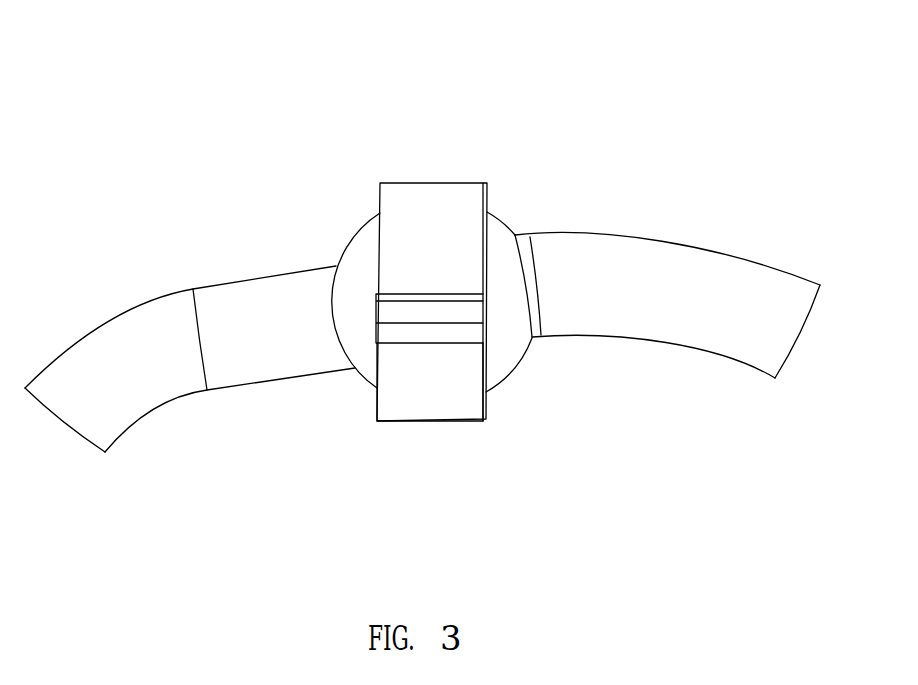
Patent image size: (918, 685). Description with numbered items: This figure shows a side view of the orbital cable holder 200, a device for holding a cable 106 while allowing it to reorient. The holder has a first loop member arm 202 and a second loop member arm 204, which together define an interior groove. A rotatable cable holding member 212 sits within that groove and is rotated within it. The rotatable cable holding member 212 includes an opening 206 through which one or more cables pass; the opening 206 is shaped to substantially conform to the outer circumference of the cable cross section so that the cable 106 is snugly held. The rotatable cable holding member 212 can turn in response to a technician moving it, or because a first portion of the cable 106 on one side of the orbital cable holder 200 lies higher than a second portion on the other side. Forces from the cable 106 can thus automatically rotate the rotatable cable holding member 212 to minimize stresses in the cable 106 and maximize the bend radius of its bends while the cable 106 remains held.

The orbital cable holder 200 is at (207, 60).
The cable 106 is at (197, 383).
The first loop member arm 202 is at (445, 192).
The second loop member arm 204 is at (432, 413).
The opening 206 is at (532, 340).
The rotatable cable holding member 212 is at (353, 250).